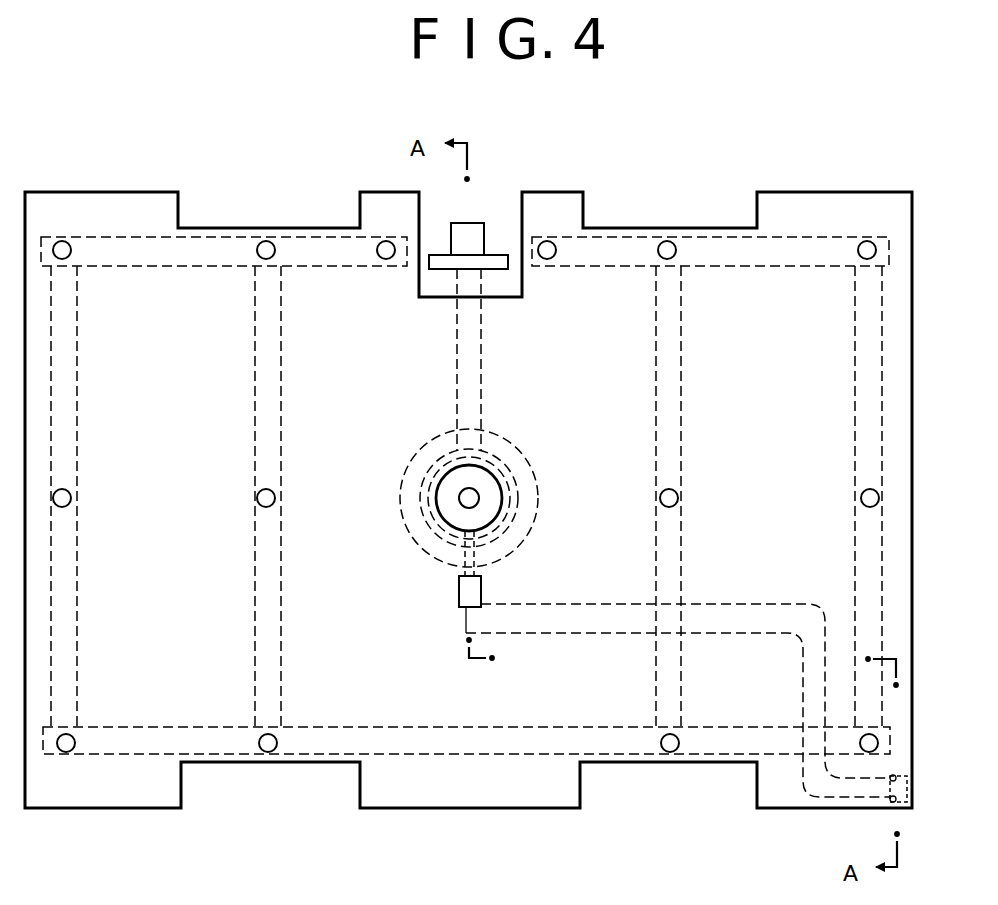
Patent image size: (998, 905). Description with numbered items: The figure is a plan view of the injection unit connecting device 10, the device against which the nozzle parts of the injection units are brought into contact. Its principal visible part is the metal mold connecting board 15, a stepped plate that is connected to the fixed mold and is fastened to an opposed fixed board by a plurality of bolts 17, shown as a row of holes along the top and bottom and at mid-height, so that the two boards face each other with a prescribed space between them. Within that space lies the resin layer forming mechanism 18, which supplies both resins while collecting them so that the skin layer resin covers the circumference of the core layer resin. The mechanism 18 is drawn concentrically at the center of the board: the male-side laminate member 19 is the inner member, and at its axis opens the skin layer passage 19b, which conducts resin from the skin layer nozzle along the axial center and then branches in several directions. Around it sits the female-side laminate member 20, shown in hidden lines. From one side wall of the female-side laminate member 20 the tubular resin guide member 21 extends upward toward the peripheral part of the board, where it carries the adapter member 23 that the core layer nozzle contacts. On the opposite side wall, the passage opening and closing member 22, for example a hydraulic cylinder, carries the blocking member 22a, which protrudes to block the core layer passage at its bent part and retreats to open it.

The injection unit connecting device 10 is at (906, 180).
The metal mold connecting board 15 is at (900, 238).
The bolts 17 is at (672, 256).
The resin layer forming mechanism 18 is at (516, 430).
The male-side laminate member 19 is at (487, 482).
The skin layer passage 19b is at (478, 500).
The female-side laminate member 20 is at (515, 532).
The resin guide member 21 is at (473, 337).
The passage opening and closing member 22 is at (458, 591).
The blocking member 22a is at (461, 558).
The adapter member 23 is at (472, 230).